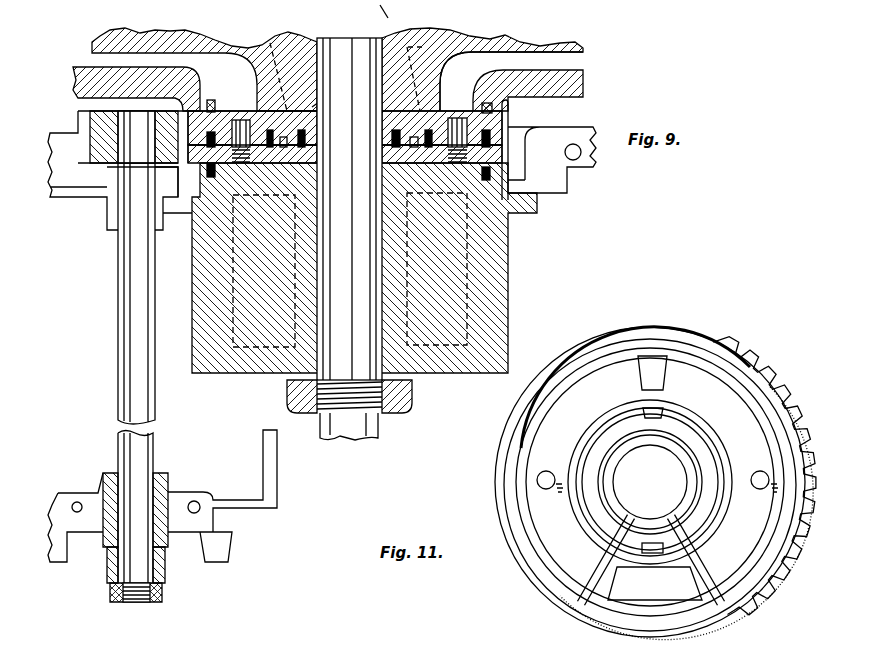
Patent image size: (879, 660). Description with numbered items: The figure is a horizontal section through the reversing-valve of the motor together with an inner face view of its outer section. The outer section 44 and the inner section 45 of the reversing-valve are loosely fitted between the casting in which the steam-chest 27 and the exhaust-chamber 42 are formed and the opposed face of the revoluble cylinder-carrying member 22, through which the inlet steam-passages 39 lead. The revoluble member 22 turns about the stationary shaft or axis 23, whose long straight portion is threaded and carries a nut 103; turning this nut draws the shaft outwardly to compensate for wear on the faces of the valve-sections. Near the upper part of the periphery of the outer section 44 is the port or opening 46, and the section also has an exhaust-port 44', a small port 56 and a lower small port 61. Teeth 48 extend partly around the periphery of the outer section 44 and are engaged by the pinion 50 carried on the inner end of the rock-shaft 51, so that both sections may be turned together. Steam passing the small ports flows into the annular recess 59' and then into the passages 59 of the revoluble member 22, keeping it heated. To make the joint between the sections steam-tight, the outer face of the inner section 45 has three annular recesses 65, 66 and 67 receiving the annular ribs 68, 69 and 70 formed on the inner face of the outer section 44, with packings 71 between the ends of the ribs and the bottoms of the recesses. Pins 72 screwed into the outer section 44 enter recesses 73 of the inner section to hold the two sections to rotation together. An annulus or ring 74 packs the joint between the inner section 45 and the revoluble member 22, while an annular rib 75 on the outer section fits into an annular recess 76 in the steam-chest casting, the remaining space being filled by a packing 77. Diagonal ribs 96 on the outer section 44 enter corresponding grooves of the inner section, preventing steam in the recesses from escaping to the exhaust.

In FIG. 9, the inlet steam-passages 39 is at (165, 62).
In FIG. 9, the passages 59 is at (358, 59).
In FIG. 9, the annular recess 59' is at (338, 47).
In FIG. 9, the exhaust-port 44' is at (393, 9).
In FIG. 11, the exhaust-port 44' is at (652, 613).
In FIG. 9, the revoluble cylinder-carrying member 22 is at (495, 40).
In FIG. 9, the pinion 50 is at (85, 118).
In FIG. 9, the annulus or ring 74 is at (214, 104).
In FIG. 9, the pins 72 is at (240, 120).
In FIG. 11, the pins 72 is at (545, 470).
In FIG. 9, the inner section 45 is at (329, 99).
In FIG. 9, the annular recess 66 is at (395, 124).
In FIG. 9, the annular recess 65 is at (392, 143).
In FIG. 9, the outer section 44 is at (349, 209).
In FIG. 11, the outer section 44 is at (654, 468).
In FIG. 9, the annular recess 67 is at (470, 130).
In FIG. 9, the packings 71 is at (500, 113).
In FIG. 9, the annular rib 70 is at (500, 150).
In FIG. 11, the annular rib 70 is at (750, 375).
In FIG. 9, the annular rib 75 is at (492, 170).
In FIG. 9, the recesses 73 is at (270, 150).
In FIG. 9, the annular recess 76 is at (218, 172).
In FIG. 9, the annular rib 68 is at (395, 163).
In FIG. 11, the annular rib 68 is at (690, 458).
In FIG. 9, the annular rib 69 is at (433, 163).
In FIG. 11, the annular rib 69 is at (722, 442).
In FIG. 9, the exhaust-chamber 42 is at (470, 262).
In FIG. 9, the steam-chest 27 is at (245, 278).
In FIG. 9, the rock-shaft 51 is at (120, 291).
In FIG. 9, the nut 103 is at (413, 391).
In FIG. 9, the stationary shaft or axis 23 is at (378, 430).
In FIG. 9, the packing 77 is at (188, 187).
In FIG. 11, the port or opening 46 is at (646, 356).
In FIG. 11, the teeth 48 is at (795, 392).
In FIG. 11, the small port 56 is at (662, 412).
In FIG. 11, the lower small port 61 is at (655, 553).
In FIG. 11, the diagonal ribs 96 is at (585, 612).